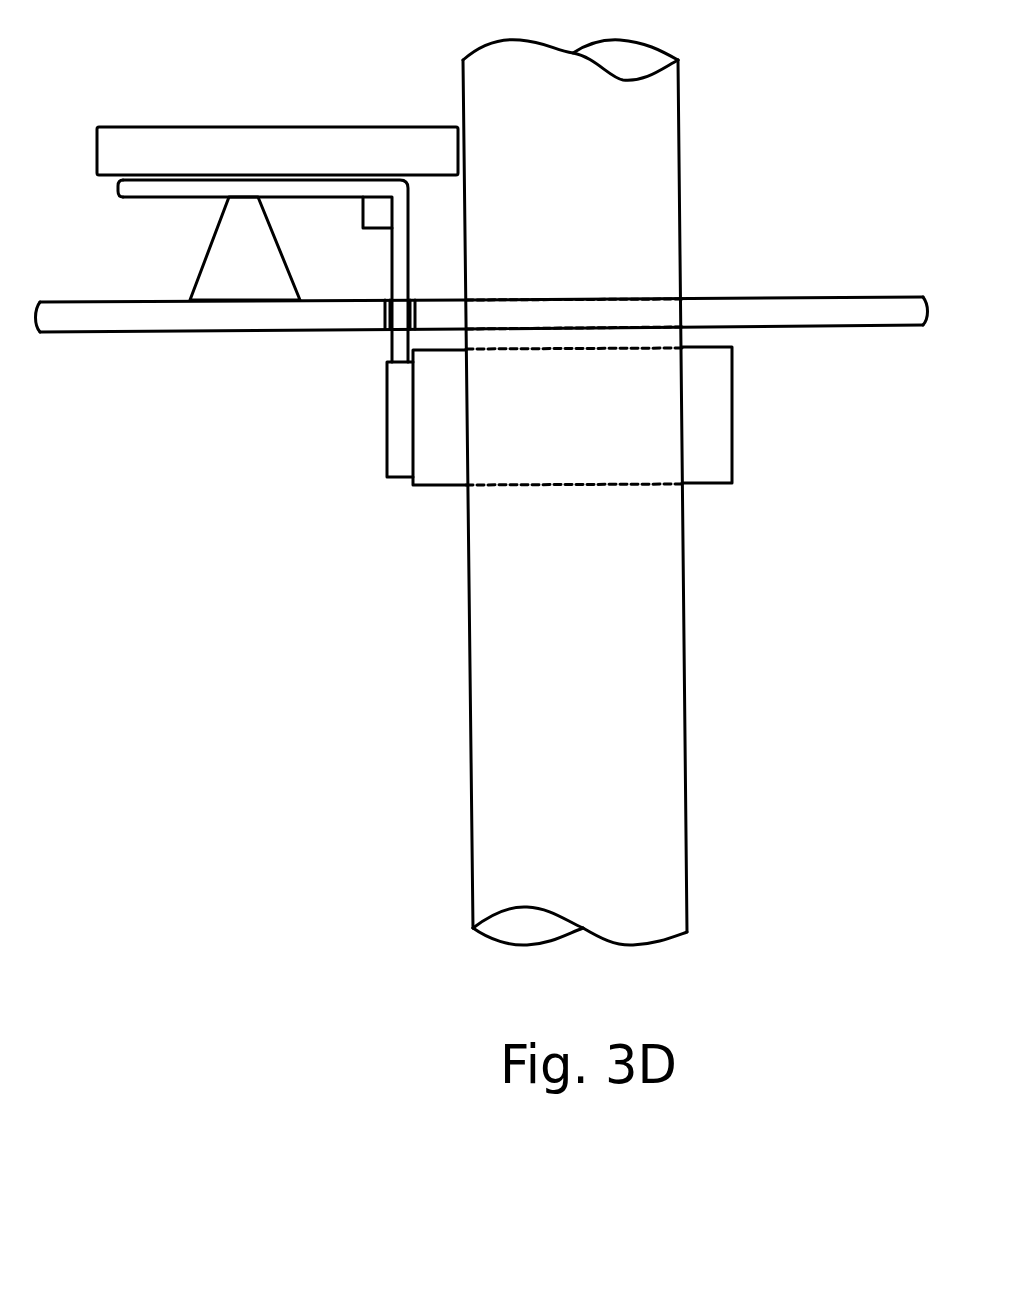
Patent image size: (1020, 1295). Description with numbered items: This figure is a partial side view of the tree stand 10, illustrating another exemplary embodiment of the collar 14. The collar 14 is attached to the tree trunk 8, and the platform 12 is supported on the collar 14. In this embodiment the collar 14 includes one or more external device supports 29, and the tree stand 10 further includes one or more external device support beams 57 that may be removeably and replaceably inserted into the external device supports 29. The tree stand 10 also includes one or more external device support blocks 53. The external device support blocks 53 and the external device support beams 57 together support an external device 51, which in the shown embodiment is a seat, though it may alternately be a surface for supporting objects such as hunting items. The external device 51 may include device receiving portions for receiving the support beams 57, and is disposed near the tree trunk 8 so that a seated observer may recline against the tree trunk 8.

The tree trunk 8 is at (679, 156).
The tree stand 10 is at (313, 683).
The platform 12 is at (113, 333).
The collar 14 is at (735, 418).
The external device support 29 is at (385, 463).
The external device 51 is at (268, 127).
The external device support block 53 is at (197, 275).
The external device support beam 57 is at (410, 259).